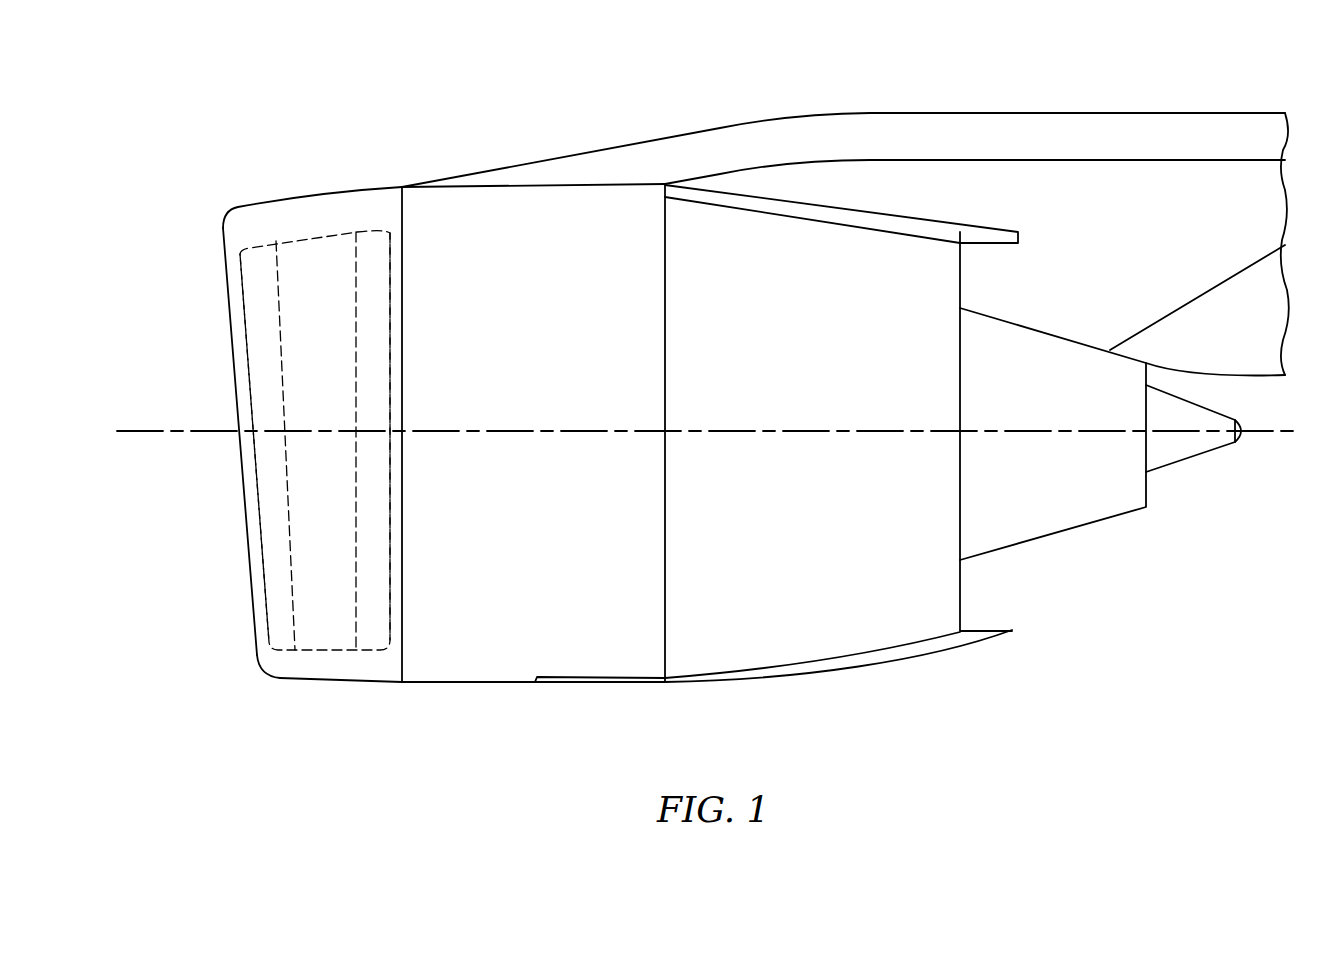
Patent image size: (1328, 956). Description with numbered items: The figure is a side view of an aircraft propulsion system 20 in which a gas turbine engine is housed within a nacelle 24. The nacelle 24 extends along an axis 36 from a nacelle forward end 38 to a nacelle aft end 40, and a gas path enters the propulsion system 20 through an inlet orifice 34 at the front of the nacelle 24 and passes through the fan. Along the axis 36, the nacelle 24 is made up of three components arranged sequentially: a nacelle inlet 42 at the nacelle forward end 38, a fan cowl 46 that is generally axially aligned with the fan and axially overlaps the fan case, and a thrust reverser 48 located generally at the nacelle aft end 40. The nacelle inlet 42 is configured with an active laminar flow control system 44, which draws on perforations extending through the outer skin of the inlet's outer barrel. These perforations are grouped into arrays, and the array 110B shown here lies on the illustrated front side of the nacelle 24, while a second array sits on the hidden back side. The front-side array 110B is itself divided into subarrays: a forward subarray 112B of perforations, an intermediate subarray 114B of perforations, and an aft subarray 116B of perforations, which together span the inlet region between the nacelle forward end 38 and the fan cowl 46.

The aircraft propulsion system 20 is at (218, 122).
The nacelle 24 is at (340, 178).
The inlet orifice 34 is at (250, 598).
The axis 36 is at (122, 431).
The nacelle forward end 38 is at (257, 655).
The nacelle aft end 40 is at (1012, 631).
The nacelle inlet 42 is at (350, 683).
The active laminar flow control (ALFC) system 44 is at (298, 655).
The fan cowl 46 is at (523, 685).
The thrust reverser 48 is at (748, 672).
The array of perforations 110B is at (248, 522).
The forward subarray of perforations 112B is at (270, 474).
The intermediate subarray of perforations 114B is at (308, 408).
The aft subarray of perforations 116B is at (373, 358).